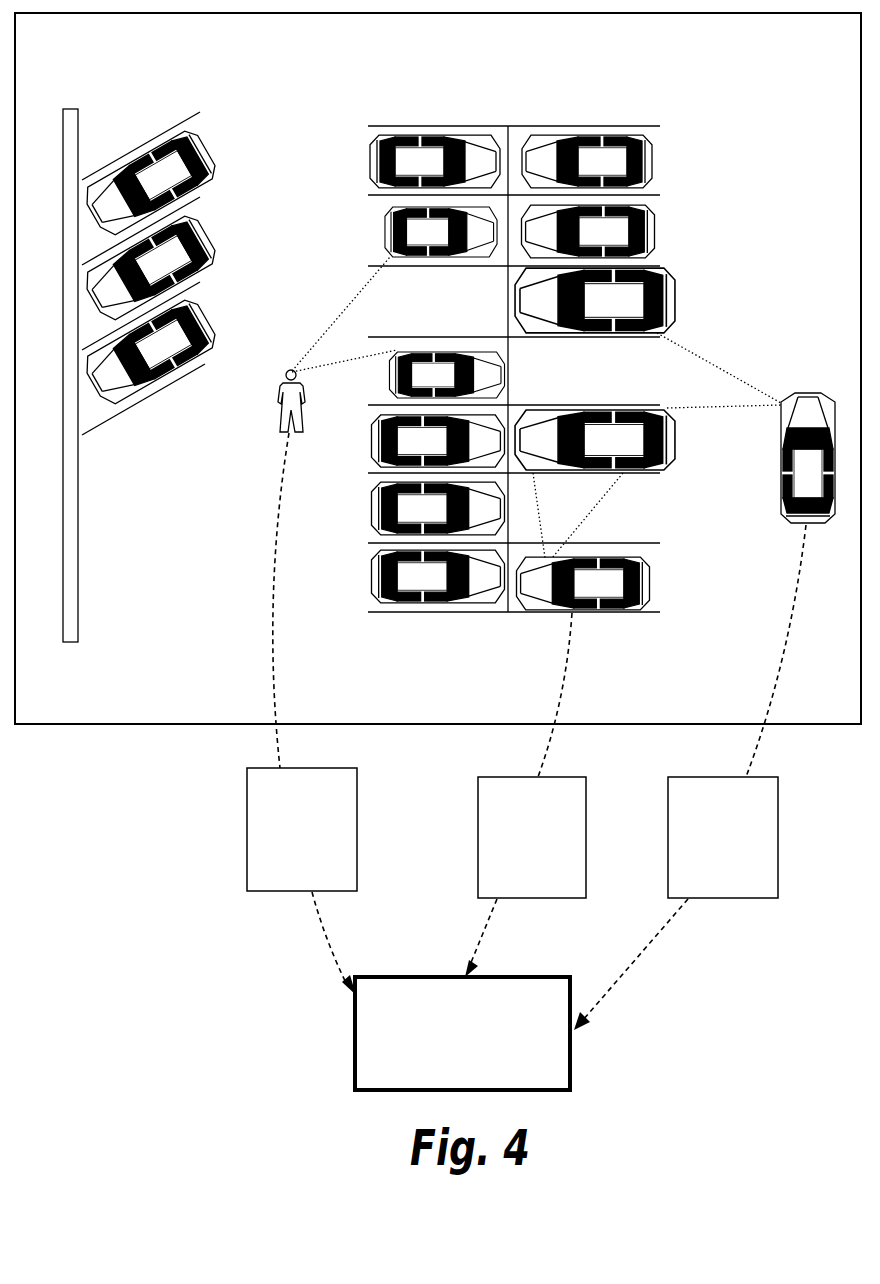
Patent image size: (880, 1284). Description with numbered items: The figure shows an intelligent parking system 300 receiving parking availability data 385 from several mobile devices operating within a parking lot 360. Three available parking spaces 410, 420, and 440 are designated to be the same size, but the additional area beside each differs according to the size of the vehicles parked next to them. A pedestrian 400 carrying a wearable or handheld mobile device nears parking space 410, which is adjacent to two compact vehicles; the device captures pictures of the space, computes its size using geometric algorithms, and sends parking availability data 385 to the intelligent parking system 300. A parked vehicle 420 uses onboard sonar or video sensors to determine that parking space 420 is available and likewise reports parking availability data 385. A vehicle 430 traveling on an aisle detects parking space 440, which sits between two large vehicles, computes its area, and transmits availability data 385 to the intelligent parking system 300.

The parking lot 360 is at (438, 368).
The parking space 410 is at (438, 301).
The parking space 440 is at (584, 371).
The parking space / vehicle 420 is at (566, 527).
The pedestrian 400 is at (280, 400).
The vehicle 430 is at (775, 472).
The parking availability data 385 is at (512, 833).
The intelligent parking system 300 is at (462, 1033).